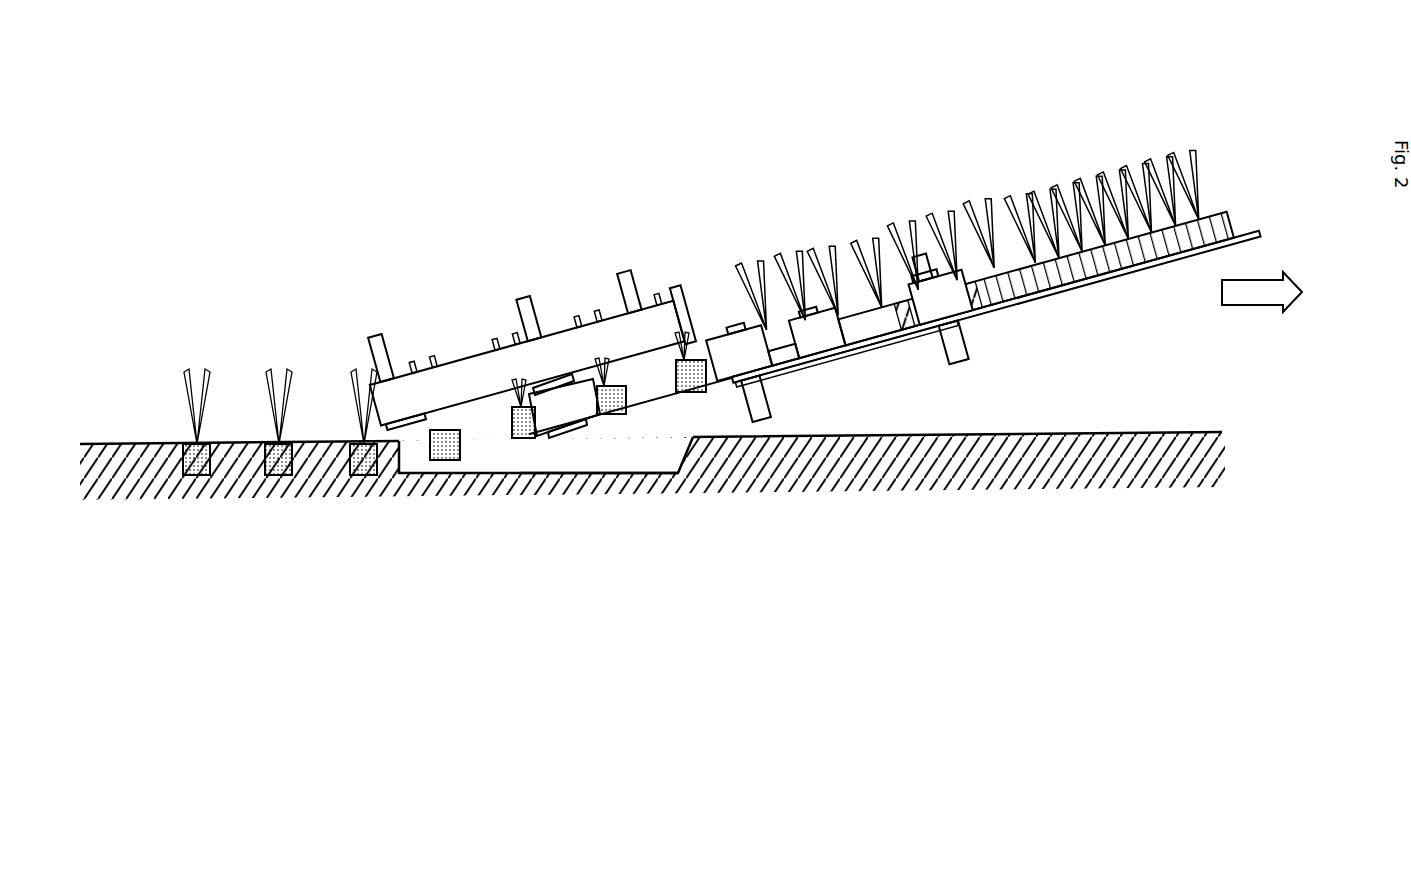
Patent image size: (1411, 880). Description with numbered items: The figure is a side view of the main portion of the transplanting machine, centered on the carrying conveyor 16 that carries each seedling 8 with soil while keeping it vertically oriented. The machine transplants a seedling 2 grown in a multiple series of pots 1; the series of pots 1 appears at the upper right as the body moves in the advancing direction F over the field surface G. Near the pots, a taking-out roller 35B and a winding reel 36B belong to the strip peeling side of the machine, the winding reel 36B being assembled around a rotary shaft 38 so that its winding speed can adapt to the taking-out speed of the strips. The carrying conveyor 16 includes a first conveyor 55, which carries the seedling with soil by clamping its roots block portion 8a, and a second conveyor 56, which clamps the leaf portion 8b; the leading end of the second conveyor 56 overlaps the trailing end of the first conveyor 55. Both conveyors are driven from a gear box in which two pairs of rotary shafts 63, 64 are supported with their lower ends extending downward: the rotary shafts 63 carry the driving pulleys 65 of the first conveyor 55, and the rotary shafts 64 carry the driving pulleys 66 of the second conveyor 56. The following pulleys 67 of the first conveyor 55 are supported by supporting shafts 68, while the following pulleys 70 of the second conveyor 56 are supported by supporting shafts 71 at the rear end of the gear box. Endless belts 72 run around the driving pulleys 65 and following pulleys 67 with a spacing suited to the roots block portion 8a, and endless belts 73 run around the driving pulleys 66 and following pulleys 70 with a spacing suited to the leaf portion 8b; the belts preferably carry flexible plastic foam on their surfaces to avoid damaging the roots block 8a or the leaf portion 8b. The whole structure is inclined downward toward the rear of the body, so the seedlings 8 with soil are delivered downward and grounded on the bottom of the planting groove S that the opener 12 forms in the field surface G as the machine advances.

The carrying conveyor 16 is at (487, 112).
The seedling 2 is at (1073, 173).
The multiple series of pots 1 is at (1222, 202).
The winding reel 36B is at (922, 268).
The taking-out roller 35B is at (812, 318).
The following pulleys 67 is at (712, 324).
The first conveyor 55 is at (710, 336).
The rotary shafts 64 is at (622, 270).
The rotary shafts 63 is at (526, 305).
The second conveyor 56 is at (474, 349).
The leaf portion 8b is at (436, 365).
The supporting shafts 71 is at (372, 348).
The advancing direction F is at (1289, 306).
The field surface G is at (1196, 432).
The rotary shaft 38 is at (957, 348).
The endless belts 72 is at (763, 367).
The supporting shafts 68 is at (765, 422).
The seedling with soil 8 is at (698, 398).
The driving pulleys 66 is at (635, 392).
The opener 12 is at (610, 478).
The roots block portion 8a is at (600, 415).
The driving pulleys 65 is at (560, 430).
The endless belts 73 is at (487, 378).
The planting groove S is at (410, 478).
The following pulleys 70 is at (388, 450).